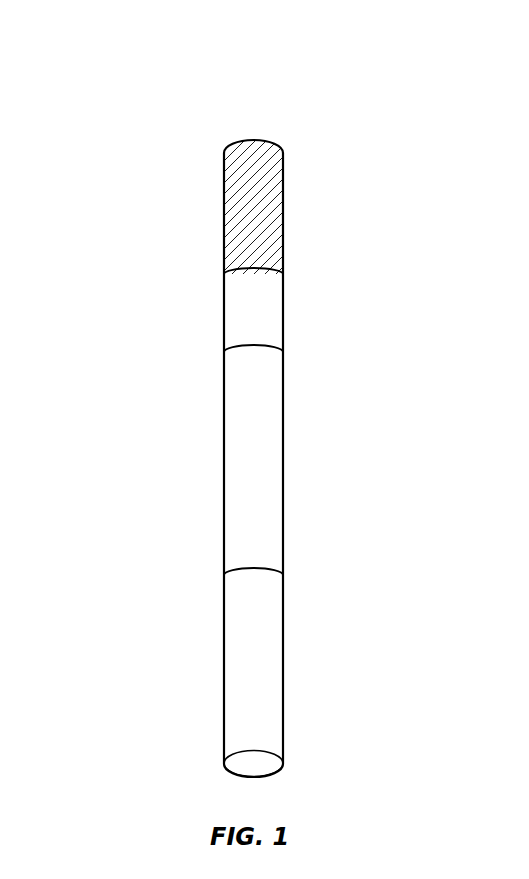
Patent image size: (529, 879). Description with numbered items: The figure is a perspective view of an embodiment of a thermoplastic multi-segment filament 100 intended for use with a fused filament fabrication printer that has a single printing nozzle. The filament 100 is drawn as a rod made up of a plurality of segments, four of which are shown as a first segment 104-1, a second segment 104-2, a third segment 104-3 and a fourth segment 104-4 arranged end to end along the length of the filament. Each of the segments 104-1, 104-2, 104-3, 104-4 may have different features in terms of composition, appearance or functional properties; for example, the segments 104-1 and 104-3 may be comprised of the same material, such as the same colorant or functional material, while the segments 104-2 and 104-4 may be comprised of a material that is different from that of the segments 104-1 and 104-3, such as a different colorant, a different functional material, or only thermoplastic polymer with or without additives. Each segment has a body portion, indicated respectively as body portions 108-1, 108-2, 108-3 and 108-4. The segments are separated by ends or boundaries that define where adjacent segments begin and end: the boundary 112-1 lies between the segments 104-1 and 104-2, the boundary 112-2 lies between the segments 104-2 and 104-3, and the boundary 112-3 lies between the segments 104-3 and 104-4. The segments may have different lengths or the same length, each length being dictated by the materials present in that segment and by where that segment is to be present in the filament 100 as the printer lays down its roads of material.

The thermoplastic multi-segment filament 100 is at (152, 108).
The first segment 104-1 is at (228, 213).
The second segment 104-2 is at (226, 309).
The third segment 104-3 is at (219, 466).
The fourth segment 104-4 is at (221, 659).
The body portion of first segment 108-1 is at (295, 218).
The body portion of second segment 108-2 is at (264, 322).
The body portion of third segment 108-3 is at (295, 467).
The body portion of fourth segment 108-4 is at (295, 682).
The first end/boundary 112-1 is at (283, 273).
The second end/boundary 112-2 is at (283, 353).
The third end/boundary 112-3 is at (283, 576).